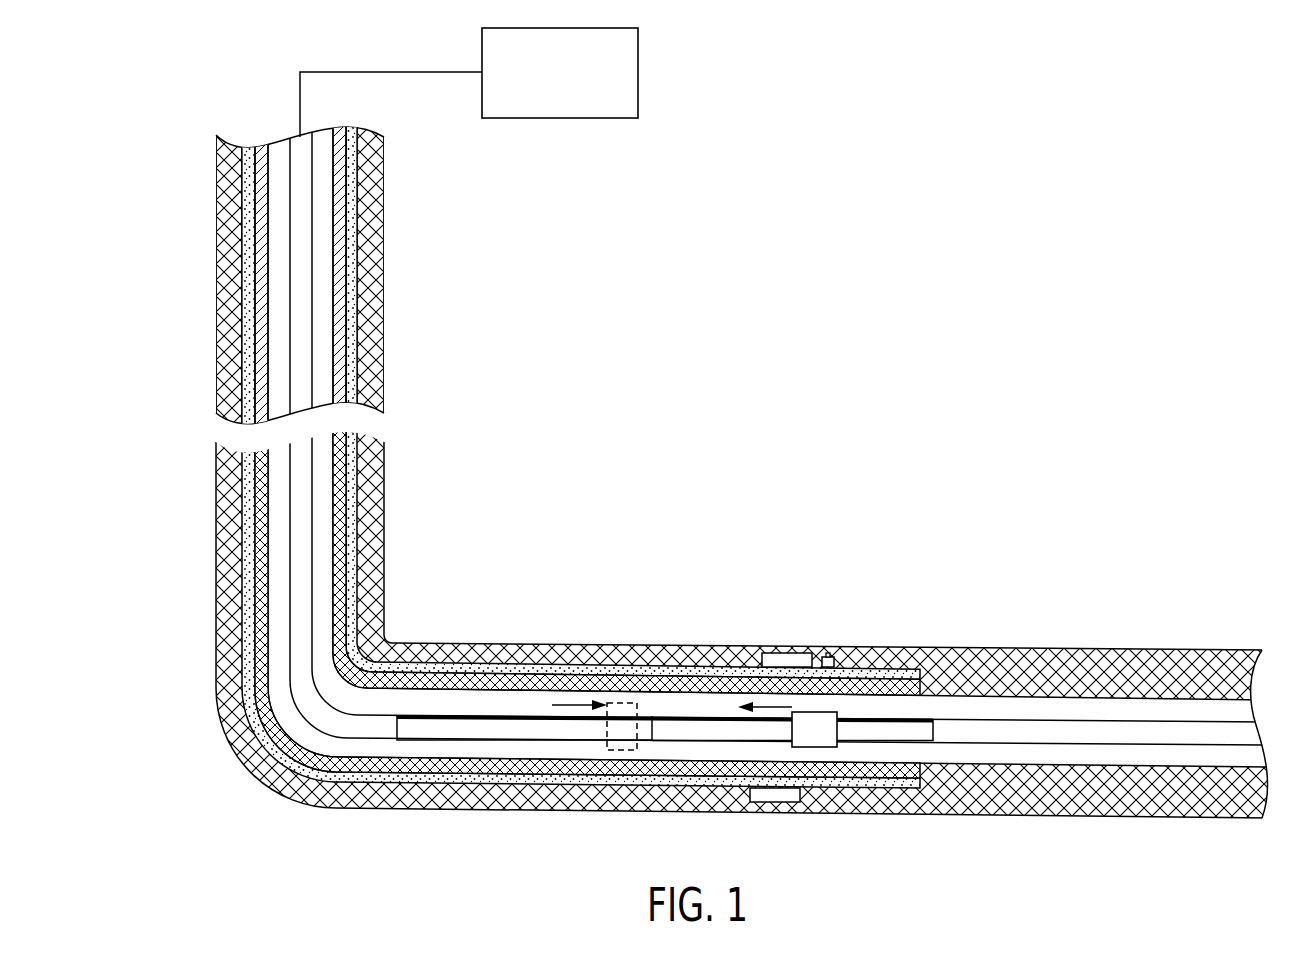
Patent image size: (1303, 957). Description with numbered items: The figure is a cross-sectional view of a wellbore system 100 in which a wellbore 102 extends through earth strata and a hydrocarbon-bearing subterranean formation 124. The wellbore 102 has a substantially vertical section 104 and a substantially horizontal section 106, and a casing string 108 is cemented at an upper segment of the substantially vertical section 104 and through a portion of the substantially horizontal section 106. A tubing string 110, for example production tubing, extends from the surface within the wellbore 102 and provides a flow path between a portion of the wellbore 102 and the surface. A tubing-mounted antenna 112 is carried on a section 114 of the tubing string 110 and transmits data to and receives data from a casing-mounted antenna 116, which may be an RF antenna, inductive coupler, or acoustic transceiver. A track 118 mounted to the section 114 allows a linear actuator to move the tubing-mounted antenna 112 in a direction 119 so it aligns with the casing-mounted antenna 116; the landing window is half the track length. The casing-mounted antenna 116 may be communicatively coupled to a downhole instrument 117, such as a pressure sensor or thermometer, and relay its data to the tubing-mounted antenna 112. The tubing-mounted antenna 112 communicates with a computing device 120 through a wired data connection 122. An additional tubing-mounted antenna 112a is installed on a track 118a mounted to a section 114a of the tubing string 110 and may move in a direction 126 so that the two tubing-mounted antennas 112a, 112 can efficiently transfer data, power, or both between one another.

The wellbore system 100 is at (280, 260).
The wellbore 102 is at (342, 576).
The substantially vertical section 104 is at (352, 500).
The substantially horizontal section 106 is at (651, 715).
The casing string 108 is at (372, 246).
The tubing string 110 is at (313, 630).
The tubing-mounted antenna 112 is at (815, 748).
The tubing-mounted antenna 112a is at (625, 703).
The section of the tubing string 114 is at (690, 741).
The section of the tubing string 114a is at (545, 741).
The casing-mounted antenna 116 is at (785, 658).
The downhole instrument 117 is at (830, 658).
The track 118 is at (878, 717).
The track 118a is at (507, 713).
The direction 119 is at (765, 708).
The computing device 120 is at (638, 73).
The wired data connection 122 is at (386, 72).
The hydrocarbon-bearing subterranean formation 124 is at (1192, 650).
The direction 126 is at (562, 708).